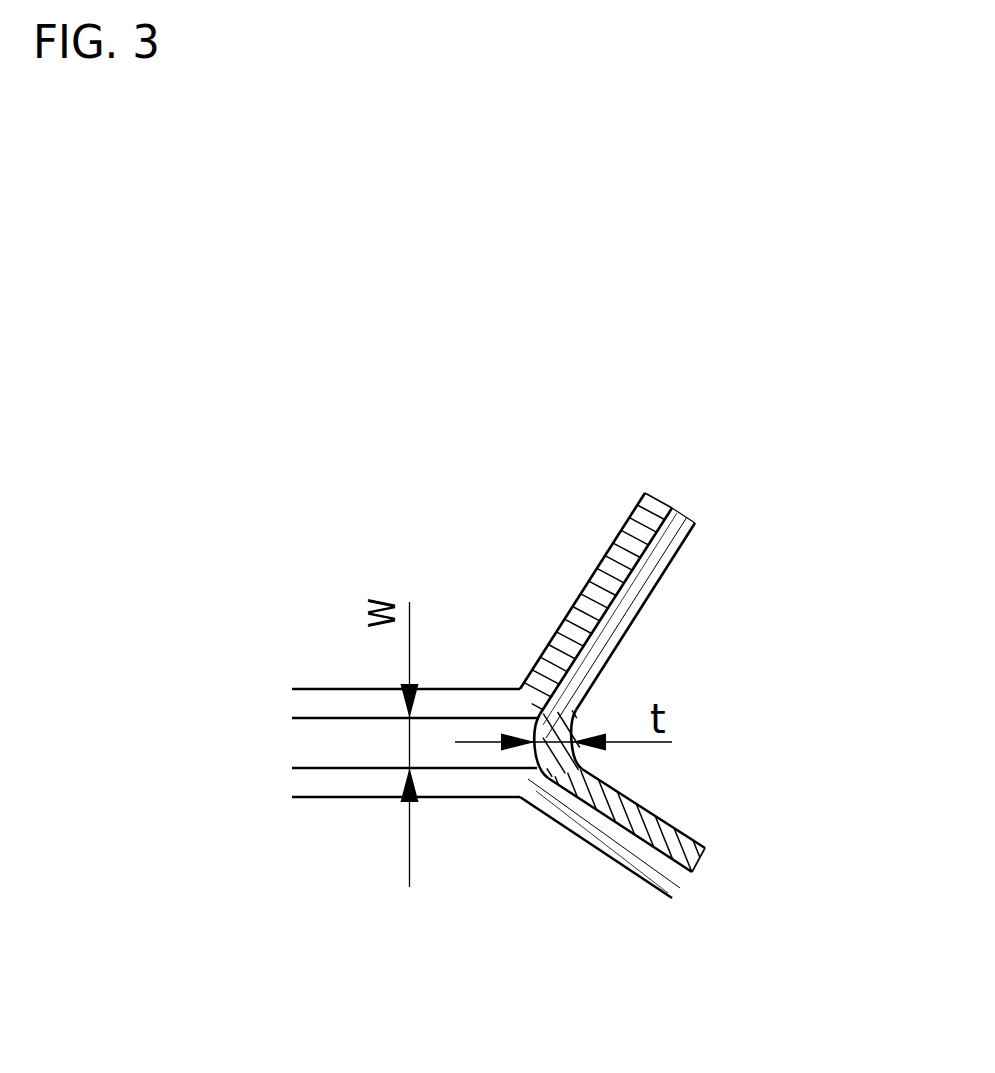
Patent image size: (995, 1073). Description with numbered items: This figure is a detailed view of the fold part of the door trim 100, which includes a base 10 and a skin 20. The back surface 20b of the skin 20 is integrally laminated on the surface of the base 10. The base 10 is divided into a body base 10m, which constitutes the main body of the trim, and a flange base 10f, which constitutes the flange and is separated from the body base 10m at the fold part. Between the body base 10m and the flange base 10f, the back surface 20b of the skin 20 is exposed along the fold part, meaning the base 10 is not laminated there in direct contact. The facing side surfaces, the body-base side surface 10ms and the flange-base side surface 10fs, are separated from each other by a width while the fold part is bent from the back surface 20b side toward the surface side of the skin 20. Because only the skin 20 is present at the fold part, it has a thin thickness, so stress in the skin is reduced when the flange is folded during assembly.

The door trim 100 is at (554, 687).
The base 10 is at (504, 658).
The flange base 10f is at (463, 605).
The flange-base side surface 10fs is at (333, 702).
The body base 10m is at (454, 833).
The body-base side surface 10ms is at (310, 783).
The skin 20 is at (562, 732).
The back surface of the skin 20b is at (373, 745).